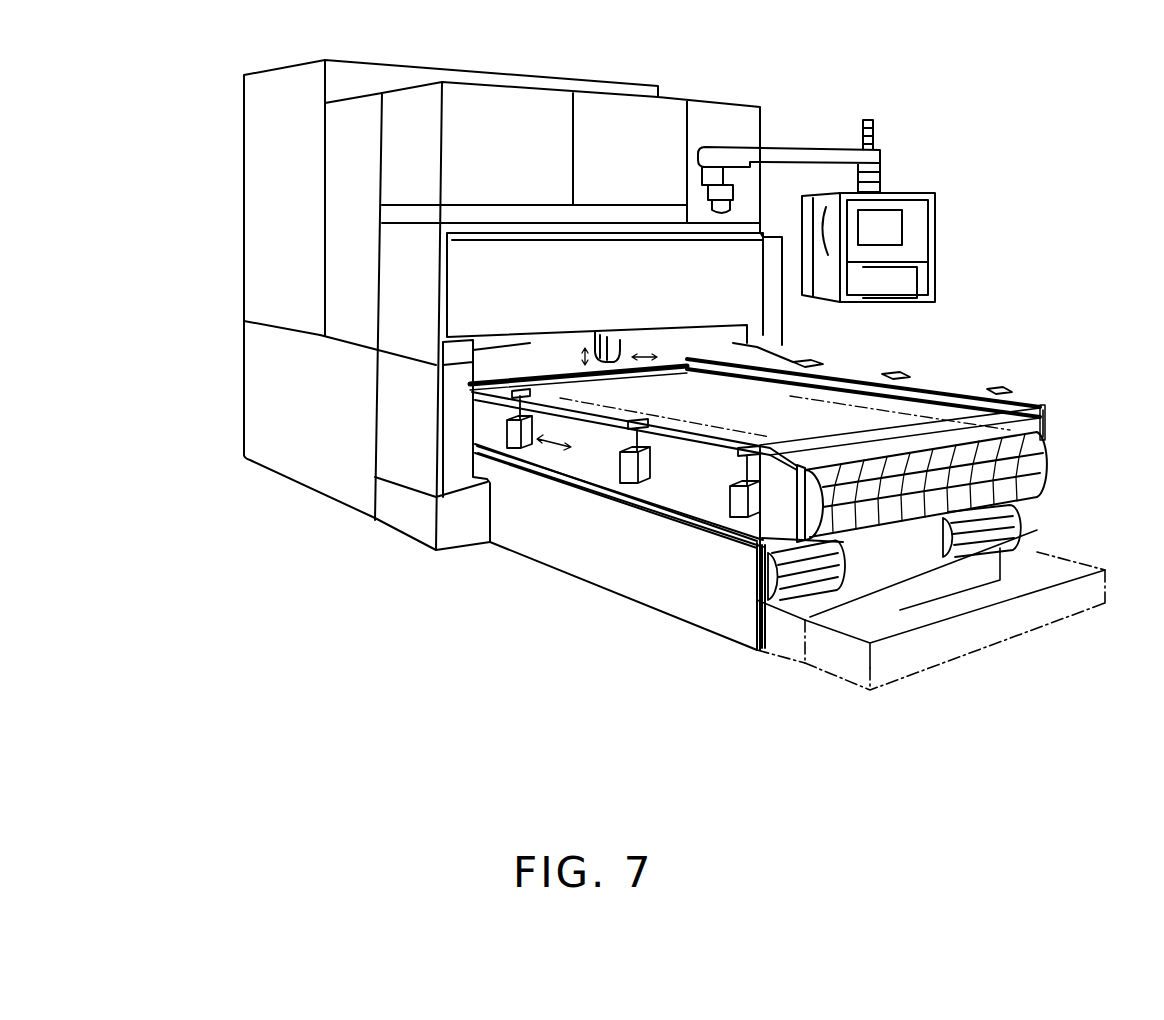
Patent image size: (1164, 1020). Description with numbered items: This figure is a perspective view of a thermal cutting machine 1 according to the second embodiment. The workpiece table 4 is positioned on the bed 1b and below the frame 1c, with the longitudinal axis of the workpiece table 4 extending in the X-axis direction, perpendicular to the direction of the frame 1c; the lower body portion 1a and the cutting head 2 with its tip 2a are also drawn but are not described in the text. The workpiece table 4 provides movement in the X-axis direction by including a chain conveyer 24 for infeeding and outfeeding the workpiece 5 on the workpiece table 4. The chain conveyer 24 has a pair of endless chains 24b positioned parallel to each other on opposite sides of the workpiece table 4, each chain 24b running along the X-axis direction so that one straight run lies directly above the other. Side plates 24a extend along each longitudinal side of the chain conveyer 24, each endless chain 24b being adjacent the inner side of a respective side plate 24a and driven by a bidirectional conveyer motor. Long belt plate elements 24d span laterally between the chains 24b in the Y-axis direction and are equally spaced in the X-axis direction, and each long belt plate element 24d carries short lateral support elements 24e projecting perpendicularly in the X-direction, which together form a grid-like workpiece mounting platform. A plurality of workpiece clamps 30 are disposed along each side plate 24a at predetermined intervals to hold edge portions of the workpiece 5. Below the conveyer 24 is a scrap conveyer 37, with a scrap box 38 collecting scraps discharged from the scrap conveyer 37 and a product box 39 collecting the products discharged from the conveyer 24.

The thermal cutting machine 1 is at (242, 418).
The lower body section 1a is at (380, 455).
The bed 1b is at (563, 547).
The frame 1c is at (382, 298).
The tool head 2 is at (624, 339).
The tool tip 2a is at (600, 334).
The workpiece table 4 is at (695, 492).
The workpiece 5 is at (830, 400).
The chain conveyer 24 is at (1002, 419).
The side plate 24a is at (658, 483).
The endless chain 24b is at (769, 531).
The long belt plate element 24d is at (1045, 431).
The short lateral support element 24e is at (1048, 455).
The workpiece clamp 30 is at (990, 393).
The scrap conveyer 37 is at (758, 595).
The scrap box 38 is at (783, 652).
The product box 39 is at (826, 670).